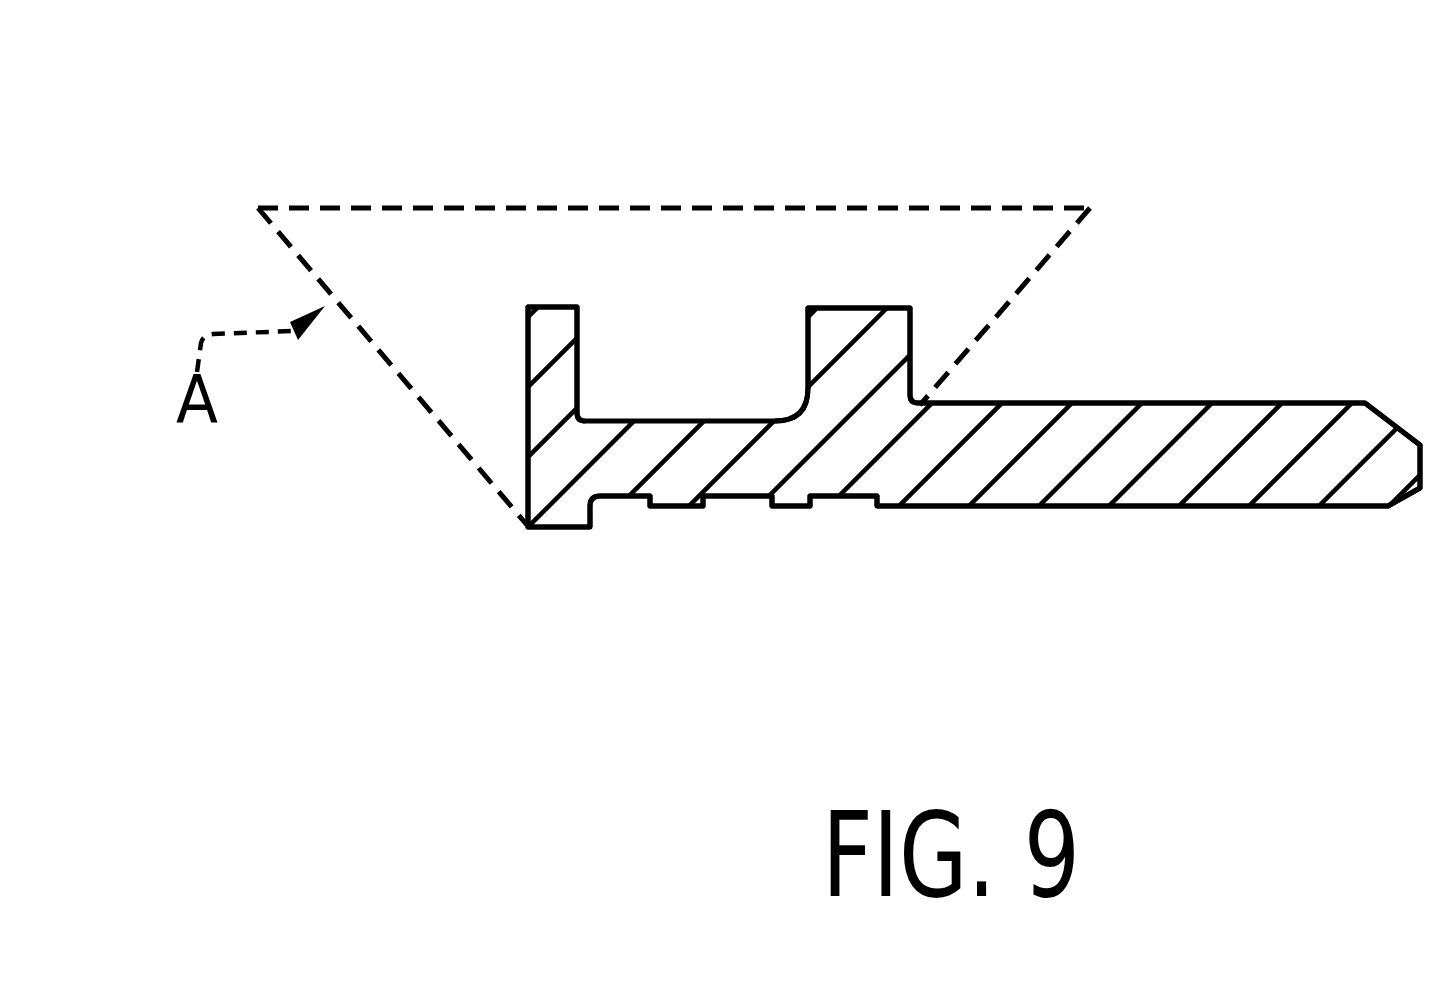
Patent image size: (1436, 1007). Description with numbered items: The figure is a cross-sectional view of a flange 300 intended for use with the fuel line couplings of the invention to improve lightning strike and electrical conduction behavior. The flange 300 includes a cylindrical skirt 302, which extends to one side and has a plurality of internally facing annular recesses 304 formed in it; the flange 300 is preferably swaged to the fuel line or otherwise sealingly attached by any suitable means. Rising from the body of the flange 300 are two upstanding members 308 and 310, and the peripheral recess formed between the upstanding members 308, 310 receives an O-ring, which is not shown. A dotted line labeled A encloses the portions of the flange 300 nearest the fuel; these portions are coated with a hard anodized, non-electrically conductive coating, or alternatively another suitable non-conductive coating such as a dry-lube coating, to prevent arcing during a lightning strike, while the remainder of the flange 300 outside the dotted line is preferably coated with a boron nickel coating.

The flange 300 is at (1285, 275).
The cylindrical skirt 302 is at (1023, 553).
The annular recesses 304 is at (622, 553).
The upstanding member 308 is at (551, 265).
The upstanding member 310 is at (857, 265).